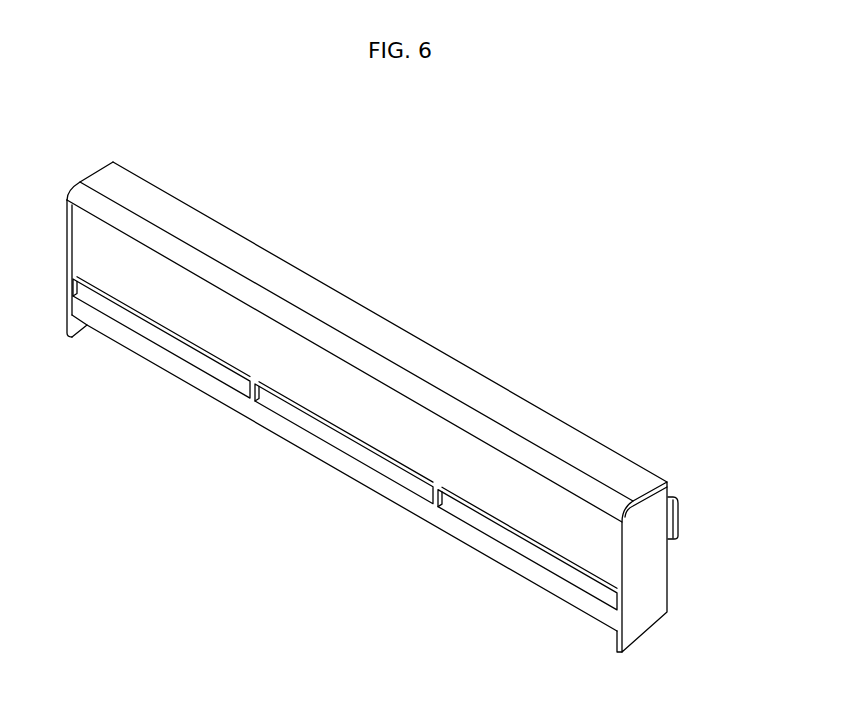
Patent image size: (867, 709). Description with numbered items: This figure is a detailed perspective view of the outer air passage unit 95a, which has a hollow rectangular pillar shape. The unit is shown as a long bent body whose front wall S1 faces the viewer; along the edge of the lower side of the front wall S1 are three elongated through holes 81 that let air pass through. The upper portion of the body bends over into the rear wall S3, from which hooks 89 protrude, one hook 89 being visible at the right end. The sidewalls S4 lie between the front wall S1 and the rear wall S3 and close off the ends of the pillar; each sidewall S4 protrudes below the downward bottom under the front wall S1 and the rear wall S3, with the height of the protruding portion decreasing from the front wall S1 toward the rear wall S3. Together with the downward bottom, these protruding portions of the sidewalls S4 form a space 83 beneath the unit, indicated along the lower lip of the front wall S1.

The outer air passage unit 95a is at (101, 128).
The rear wall S3 is at (373, 311).
The front wall S1 is at (412, 440).
The through holes 81 is at (510, 553).
The space 83 is at (248, 421).
The sidewalls S4 is at (643, 600).
The hooks 89 is at (679, 521).